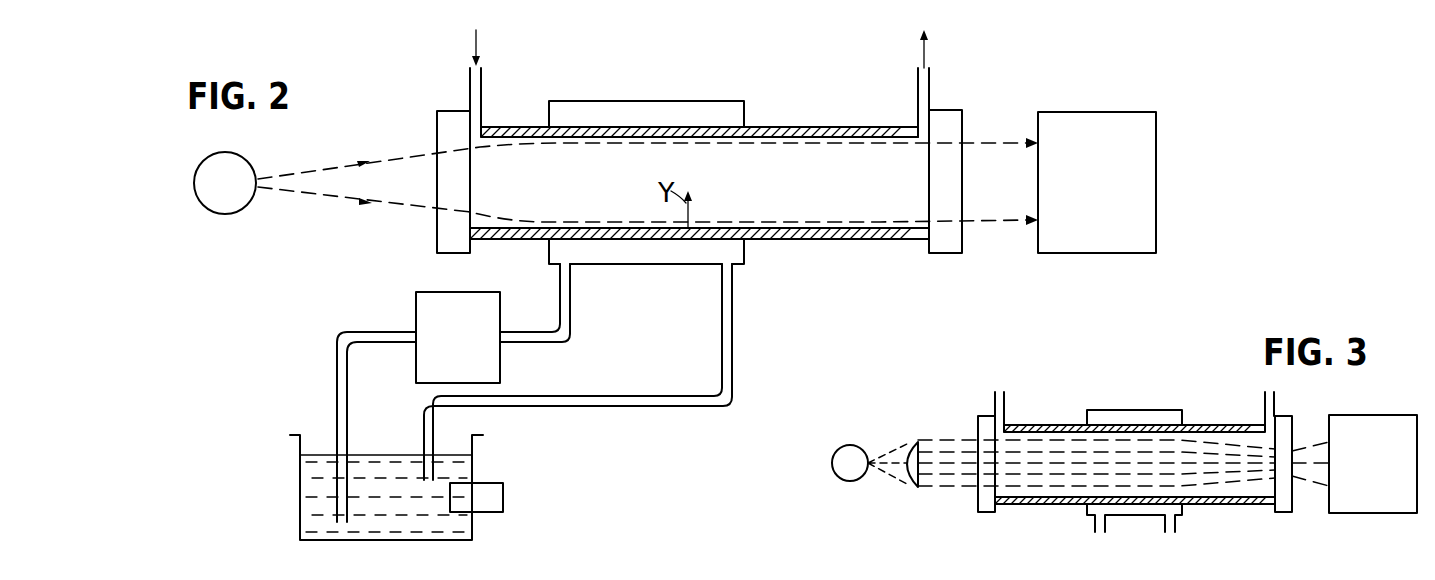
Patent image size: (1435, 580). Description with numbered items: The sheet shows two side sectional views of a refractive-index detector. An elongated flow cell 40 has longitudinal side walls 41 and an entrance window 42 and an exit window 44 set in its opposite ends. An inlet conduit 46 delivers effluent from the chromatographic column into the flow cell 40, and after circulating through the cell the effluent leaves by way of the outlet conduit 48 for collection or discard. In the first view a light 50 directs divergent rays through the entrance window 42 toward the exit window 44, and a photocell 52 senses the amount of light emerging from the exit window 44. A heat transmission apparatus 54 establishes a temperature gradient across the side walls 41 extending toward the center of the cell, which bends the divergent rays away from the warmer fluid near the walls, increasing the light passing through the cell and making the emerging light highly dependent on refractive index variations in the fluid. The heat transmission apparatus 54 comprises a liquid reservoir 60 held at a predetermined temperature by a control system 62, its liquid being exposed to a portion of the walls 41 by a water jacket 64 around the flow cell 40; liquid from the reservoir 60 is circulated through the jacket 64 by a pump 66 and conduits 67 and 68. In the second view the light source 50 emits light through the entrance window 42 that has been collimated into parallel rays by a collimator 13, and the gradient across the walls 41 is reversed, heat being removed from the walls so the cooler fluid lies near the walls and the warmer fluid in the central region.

In FIG. 3, the collimator 13 is at (908, 446).
In FIG. 2, the flow cell 40 is at (820, 124).
In FIG. 2, the side walls 41 is at (855, 240).
In FIG. 3, the side walls 41 is at (1055, 505).
In FIG. 2, the entrance window 42 is at (437, 241).
In FIG. 3, the entrance window 42 is at (985, 505).
In FIG. 2, the exit window 44 is at (962, 247).
In FIG. 3, the exit window 44 is at (1283, 512).
In FIG. 2, the inlet conduit 46 is at (470, 72).
In FIG. 3, the inlet conduit 46 is at (995, 400).
In FIG. 2, the outlet conduit 48 is at (929, 80).
In FIG. 3, the outlet conduit 48 is at (1265, 400).
In FIG. 2, the light 50 is at (204, 201).
In FIG. 3, the light 50 is at (848, 455).
In FIG. 2, the photocell 52 is at (1077, 254).
In FIG. 3, the photocell 52 is at (1368, 425).
In FIG. 2, the heat transmission apparatus 54 is at (534, 393).
In FIG. 2, the liquid reservoir 60 is at (300, 467).
In FIG. 2, the control system 62 is at (503, 495).
In FIG. 2, the water jacket 64 is at (667, 265).
In FIG. 2, the pump 66 is at (416, 300).
In FIG. 2, the conduit 67 is at (570, 300).
In FIG. 2, the conduit 68 is at (722, 320).